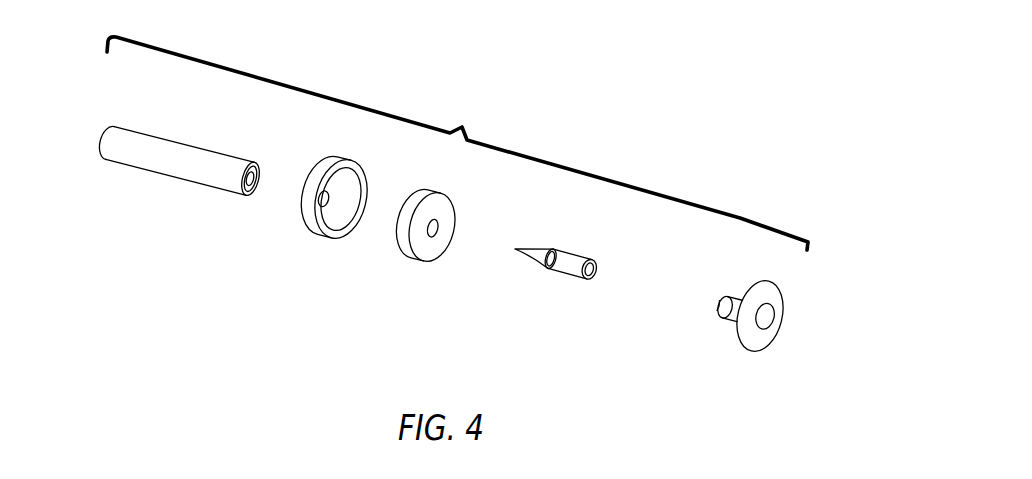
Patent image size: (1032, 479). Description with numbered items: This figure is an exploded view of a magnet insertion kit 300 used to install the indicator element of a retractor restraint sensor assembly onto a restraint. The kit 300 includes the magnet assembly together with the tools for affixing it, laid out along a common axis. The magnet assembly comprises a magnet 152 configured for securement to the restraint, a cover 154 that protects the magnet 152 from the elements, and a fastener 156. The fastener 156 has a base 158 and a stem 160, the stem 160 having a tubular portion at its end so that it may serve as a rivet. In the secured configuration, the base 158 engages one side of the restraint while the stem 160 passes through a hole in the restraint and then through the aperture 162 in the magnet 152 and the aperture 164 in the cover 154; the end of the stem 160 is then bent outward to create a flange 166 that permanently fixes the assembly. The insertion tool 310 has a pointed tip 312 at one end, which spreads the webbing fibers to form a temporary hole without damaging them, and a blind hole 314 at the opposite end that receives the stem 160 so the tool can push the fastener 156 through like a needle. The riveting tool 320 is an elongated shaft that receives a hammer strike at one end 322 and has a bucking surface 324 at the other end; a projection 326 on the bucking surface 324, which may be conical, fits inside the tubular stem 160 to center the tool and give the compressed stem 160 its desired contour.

The magnet 152 is at (440, 238).
The cover 154 is at (347, 210).
The fastener 156 is at (736, 319).
The base 158 is at (765, 316).
The stem 160 is at (729, 308).
The aperture 162 is at (411, 256).
The aperture 164 is at (324, 199).
The flange 166 is at (718, 306).
The magnet insertion kit 300 is at (457, 143).
The insertion tool 310 is at (552, 255).
The pointed tip 312 is at (532, 253).
The blind hole 314 is at (574, 244).
The riveting tool 320 is at (180, 160).
The end 322 is at (82, 119).
The bucking surface 324 is at (251, 178).
The projection 326 is at (250, 178).